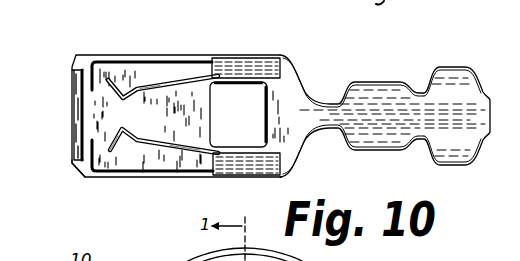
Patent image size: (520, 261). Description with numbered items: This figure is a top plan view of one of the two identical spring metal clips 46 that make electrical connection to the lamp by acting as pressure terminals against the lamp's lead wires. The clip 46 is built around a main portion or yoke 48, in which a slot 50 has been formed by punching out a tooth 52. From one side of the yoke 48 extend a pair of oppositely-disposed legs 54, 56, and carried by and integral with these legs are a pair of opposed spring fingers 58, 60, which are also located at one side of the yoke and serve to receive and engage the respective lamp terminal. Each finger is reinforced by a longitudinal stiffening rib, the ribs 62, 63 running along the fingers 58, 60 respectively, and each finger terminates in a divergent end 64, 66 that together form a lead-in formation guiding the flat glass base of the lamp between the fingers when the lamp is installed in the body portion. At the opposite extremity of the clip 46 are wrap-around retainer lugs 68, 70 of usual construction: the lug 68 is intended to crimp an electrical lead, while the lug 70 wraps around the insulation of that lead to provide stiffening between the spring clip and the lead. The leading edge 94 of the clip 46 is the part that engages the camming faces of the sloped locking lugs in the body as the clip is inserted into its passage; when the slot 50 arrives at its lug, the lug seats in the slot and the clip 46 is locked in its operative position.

The spring metal clip 46 is at (312, 53).
The yoke 48 is at (130, 70).
The slot 50 is at (243, 90).
The tooth 52 is at (262, 108).
The leg 54 is at (227, 55).
The leg 56 is at (228, 180).
The spring finger 58 is at (170, 82).
The spring finger 60 is at (153, 148).
The longitudinal stiffening rib 62 is at (185, 143).
The longitudinal stiffening rib 63 is at (150, 88).
The divergent end 64 is at (105, 62).
The divergent end 66 is at (118, 147).
The wrap-around retainer lug 68 is at (382, 93).
The wrap-around retainer lug 70 is at (467, 78).
The leading edge 94 is at (75, 137).